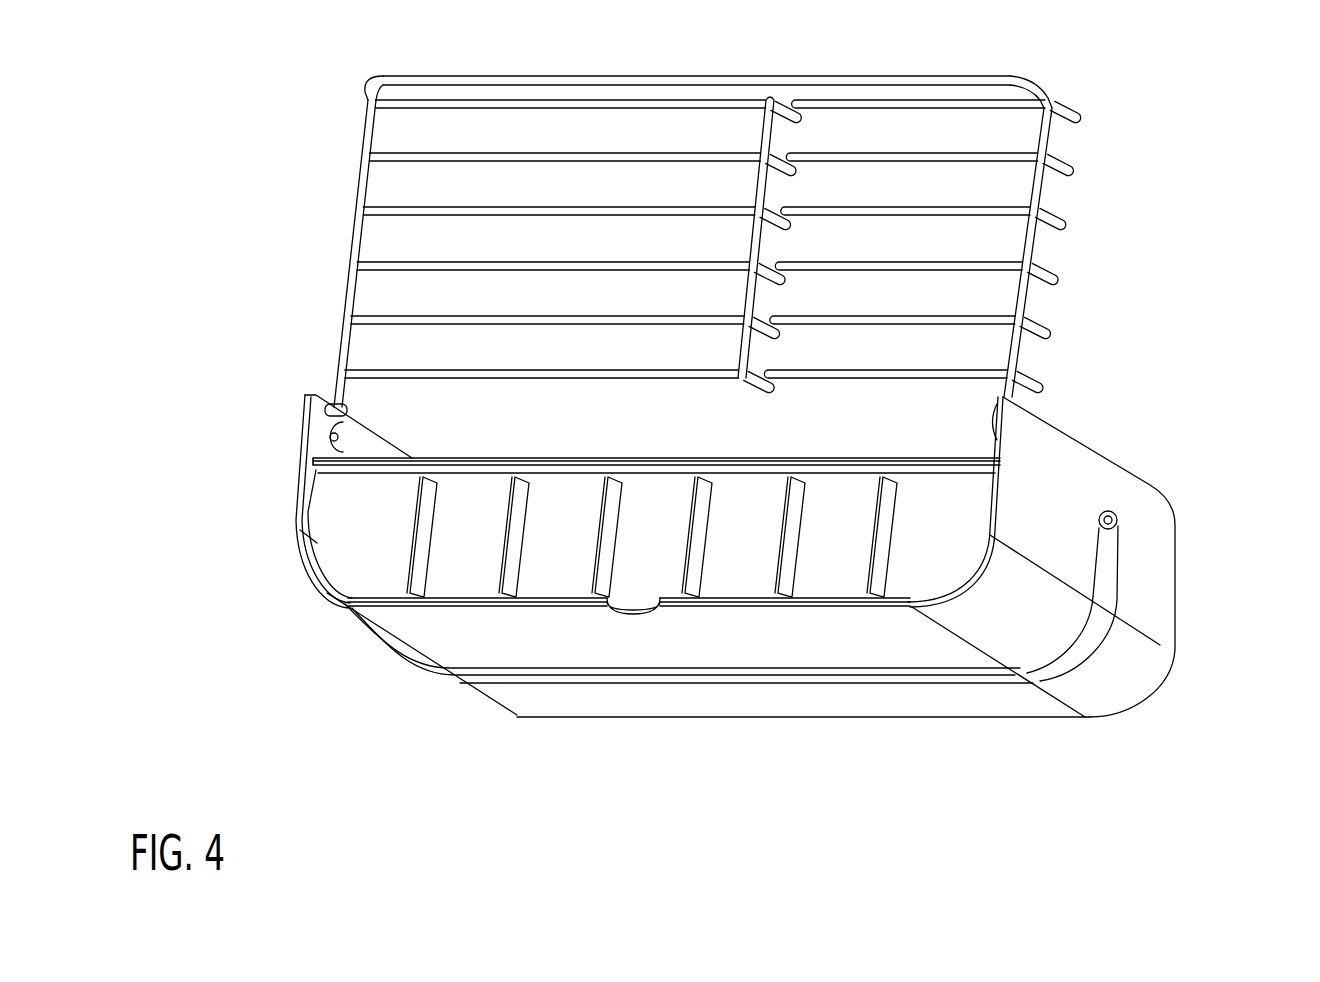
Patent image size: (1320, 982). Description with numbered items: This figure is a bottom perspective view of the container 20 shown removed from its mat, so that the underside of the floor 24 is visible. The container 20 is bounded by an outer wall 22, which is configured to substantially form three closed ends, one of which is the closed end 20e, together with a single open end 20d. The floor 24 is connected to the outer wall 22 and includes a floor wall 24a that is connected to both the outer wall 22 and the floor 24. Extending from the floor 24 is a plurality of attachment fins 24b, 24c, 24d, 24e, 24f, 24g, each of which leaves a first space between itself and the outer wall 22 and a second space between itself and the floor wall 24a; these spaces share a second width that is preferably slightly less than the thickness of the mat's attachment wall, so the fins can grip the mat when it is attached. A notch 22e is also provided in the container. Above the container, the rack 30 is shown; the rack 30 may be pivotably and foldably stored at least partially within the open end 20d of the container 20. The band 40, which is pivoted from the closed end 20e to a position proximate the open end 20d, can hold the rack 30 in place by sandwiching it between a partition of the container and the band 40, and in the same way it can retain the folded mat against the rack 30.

The container 20 is at (1240, 784).
The open end 20d is at (398, 428).
The closed end 20e is at (876, 748).
The outer wall 22 is at (1147, 527).
The notch 22e is at (616, 633).
The floor 24 is at (927, 562).
The floor wall 24a is at (943, 470).
The attachment fin 24b is at (847, 560).
The attachment fin 24c is at (749, 570).
The attachment fin 24d is at (657, 573).
The attachment fin 24e is at (567, 581).
The attachment fin 24f is at (478, 580).
The attachment fin 24g is at (382, 566).
The rack 30 is at (1097, 86).
The band 40 is at (1130, 590).